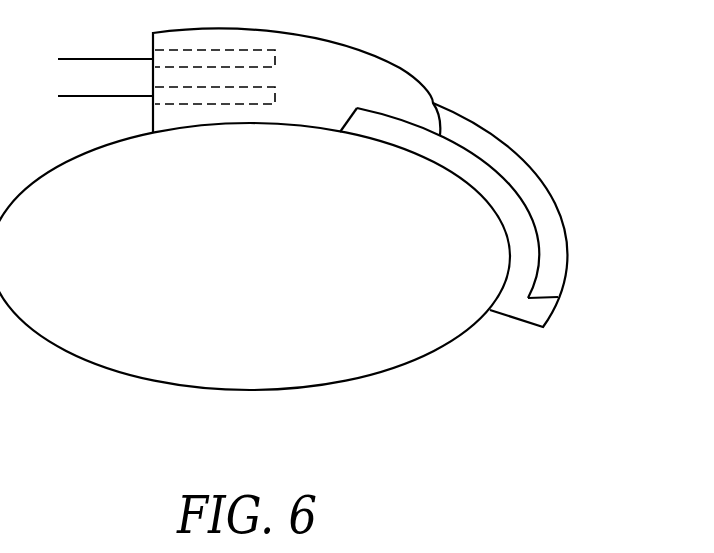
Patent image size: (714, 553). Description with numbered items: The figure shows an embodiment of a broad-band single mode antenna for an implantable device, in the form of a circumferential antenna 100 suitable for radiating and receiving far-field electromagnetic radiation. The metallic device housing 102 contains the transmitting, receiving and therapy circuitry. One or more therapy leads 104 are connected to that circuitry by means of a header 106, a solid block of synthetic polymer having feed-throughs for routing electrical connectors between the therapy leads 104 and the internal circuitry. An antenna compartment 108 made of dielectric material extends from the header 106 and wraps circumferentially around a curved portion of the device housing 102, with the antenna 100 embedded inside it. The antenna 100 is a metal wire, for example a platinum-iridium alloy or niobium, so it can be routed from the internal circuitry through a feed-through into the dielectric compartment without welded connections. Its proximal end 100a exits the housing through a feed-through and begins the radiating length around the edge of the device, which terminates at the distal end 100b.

The circumferential antenna 100 is at (512, 188).
The proximal end 100a is at (348, 118).
The distal end 100b is at (558, 297).
The device housing 102 is at (100, 147).
The therapy leads 104 is at (99, 59).
The header 106 is at (332, 40).
The antenna compartment 108 is at (501, 140).